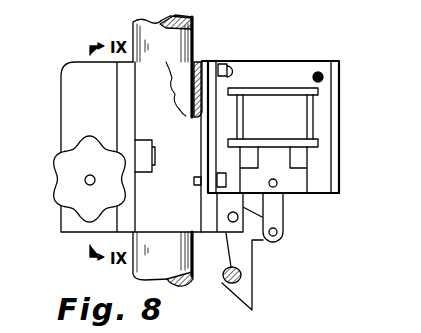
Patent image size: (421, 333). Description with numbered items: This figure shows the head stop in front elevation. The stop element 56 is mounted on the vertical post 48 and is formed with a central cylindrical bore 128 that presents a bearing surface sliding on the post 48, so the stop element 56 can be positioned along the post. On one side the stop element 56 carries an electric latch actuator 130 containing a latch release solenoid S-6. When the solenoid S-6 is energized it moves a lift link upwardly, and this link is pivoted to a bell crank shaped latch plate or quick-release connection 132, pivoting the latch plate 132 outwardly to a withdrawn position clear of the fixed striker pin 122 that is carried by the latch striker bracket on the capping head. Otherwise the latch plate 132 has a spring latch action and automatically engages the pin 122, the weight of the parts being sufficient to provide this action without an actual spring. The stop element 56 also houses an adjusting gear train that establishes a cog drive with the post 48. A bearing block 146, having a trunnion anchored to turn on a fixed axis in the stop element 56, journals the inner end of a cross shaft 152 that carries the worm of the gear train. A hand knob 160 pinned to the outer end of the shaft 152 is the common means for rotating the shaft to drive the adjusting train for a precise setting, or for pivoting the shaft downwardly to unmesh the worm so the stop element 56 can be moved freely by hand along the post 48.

The post 48 is at (195, 35).
The stop element 56 is at (198, 64).
The central cylindrical bore 128 is at (191, 91).
The bearing block 146 is at (156, 158).
The cross shaft 152 is at (85, 177).
The hand knob 160 is at (54, 190).
The fixed striker pin 122 is at (230, 266).
The electric latch actuator 130 is at (291, 190).
The latch plate 132 is at (252, 257).
The latch release solenoid S-6 is at (261, 103).